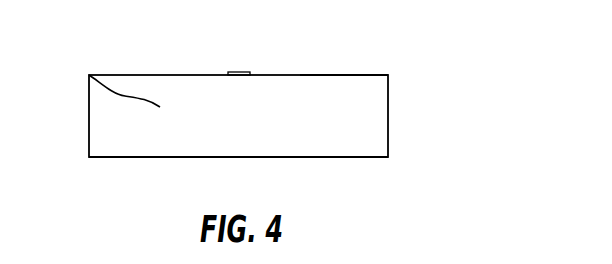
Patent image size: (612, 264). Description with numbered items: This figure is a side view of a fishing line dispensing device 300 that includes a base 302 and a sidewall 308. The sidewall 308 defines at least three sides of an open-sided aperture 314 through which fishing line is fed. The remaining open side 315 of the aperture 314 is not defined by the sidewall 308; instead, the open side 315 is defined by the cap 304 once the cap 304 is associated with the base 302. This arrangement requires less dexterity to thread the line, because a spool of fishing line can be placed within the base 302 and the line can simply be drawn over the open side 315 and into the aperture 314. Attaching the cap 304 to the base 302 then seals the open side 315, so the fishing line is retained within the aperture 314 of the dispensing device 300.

The fishing line dispensing device 300 is at (411, 117).
The base 302 is at (262, 134).
The cap 304 is at (336, 64).
The sidewall 308 is at (311, 145).
The open-sided aperture 314 is at (89, 75).
The open side 315 is at (165, 64).